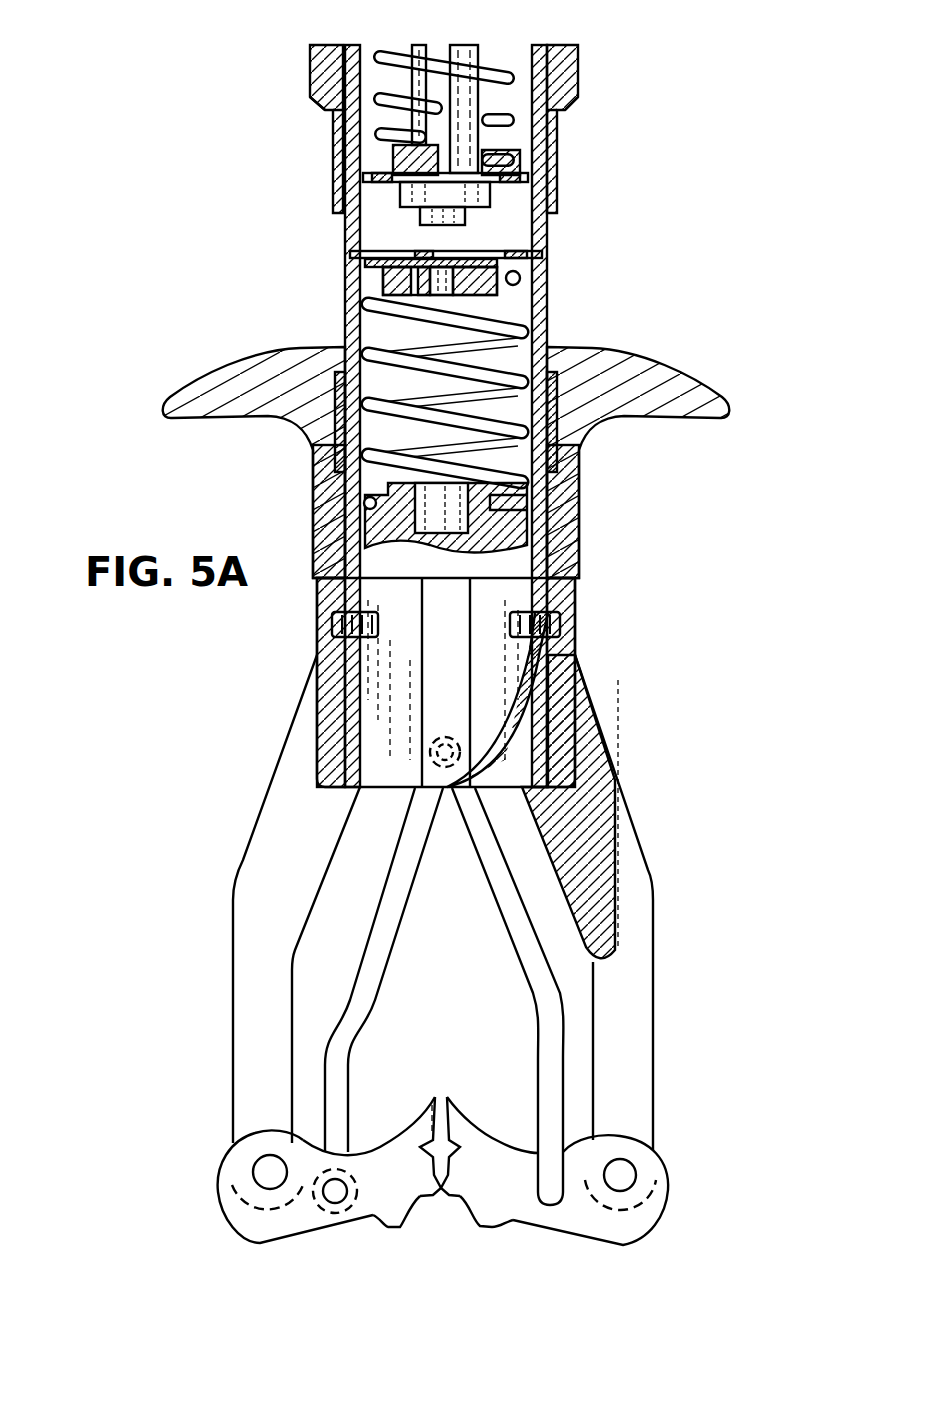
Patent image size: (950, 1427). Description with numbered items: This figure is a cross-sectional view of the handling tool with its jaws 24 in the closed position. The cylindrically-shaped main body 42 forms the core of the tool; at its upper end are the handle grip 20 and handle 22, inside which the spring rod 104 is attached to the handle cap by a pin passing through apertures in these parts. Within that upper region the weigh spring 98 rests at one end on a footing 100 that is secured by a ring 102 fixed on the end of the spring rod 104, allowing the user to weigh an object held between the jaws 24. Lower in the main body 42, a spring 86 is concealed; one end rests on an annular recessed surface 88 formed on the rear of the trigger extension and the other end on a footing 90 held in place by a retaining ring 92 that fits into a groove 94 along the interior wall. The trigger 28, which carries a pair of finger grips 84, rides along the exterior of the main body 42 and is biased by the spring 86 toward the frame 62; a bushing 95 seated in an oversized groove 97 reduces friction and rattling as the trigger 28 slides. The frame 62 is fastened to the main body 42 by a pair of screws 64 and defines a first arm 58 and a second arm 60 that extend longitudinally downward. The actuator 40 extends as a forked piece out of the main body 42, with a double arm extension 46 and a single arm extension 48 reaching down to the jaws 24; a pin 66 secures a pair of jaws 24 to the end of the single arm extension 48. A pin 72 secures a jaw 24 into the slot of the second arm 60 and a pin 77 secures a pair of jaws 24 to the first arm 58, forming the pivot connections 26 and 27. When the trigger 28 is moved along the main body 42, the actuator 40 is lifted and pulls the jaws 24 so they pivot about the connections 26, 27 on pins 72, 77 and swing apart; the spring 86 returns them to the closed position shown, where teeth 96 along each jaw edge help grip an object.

The handle grip 20 is at (578, 85).
The handle 22 is at (562, 162).
The jaws 24 is at (439, 1207).
The connection 26 is at (212, 1160).
The connection 27 is at (678, 1142).
The trigger 28 is at (487, 516).
The actuator 40 is at (380, 1001).
The main body 42 is at (522, 283).
The double arm extension 46 is at (500, 912).
The single arm extension 48 is at (372, 933).
The first arm 58 is at (258, 940).
The second arm 60 is at (640, 985).
The frame 62 is at (578, 670).
The screws 64 is at (332, 624).
The pin 66 is at (335, 1195).
The pin 72 is at (625, 1175).
The pin 77 is at (272, 1172).
The finger grips 84 is at (705, 375).
The spring 86 is at (500, 320).
The recessed surface 88 is at (550, 483).
The footing 90 is at (375, 292).
The retaining ring 92 is at (525, 253).
The groove 94 is at (350, 255).
The bushing 95 is at (330, 436).
The teeth 96 is at (388, 1226).
The groove 97 is at (583, 452).
The weigh spring 98 is at (366, 45).
The footing 100 is at (520, 148).
The ring 102 is at (516, 210).
The spring rod 104 is at (470, 55).